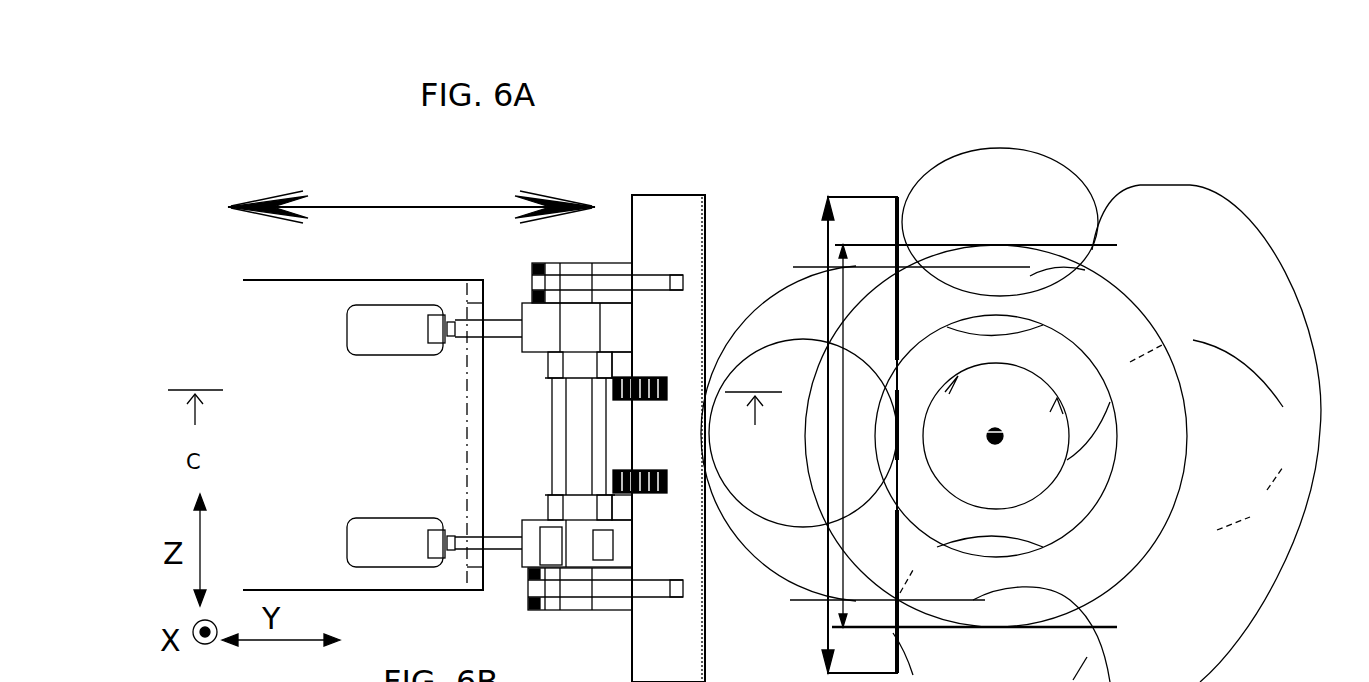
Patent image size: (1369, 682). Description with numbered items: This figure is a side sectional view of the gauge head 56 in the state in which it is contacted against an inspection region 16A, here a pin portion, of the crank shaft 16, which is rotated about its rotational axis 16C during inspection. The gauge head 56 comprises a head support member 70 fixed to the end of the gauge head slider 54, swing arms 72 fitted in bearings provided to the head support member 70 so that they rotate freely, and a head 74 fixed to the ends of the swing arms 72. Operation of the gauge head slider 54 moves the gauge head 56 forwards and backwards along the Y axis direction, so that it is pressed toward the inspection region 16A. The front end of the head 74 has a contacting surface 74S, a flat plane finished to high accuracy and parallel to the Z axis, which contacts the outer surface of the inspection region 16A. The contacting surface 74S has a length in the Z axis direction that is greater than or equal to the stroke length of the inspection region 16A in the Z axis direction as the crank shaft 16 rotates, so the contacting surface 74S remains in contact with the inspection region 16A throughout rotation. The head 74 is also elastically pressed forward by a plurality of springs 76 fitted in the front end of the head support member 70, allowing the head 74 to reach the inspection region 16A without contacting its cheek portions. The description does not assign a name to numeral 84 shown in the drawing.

The swing arrow / swinging motion 84 is at (405, 206).
The gauge head slider 54 is at (388, 280).
The head support member 70 is at (506, 304).
The swing arms 72 is at (553, 263).
The springs 76 is at (650, 377).
The gauge head 56 is at (611, 190).
The head 74 is at (668, 195).
The contacting surface 74S is at (712, 226).
The crank shaft 16 is at (838, 178).
The inspection region 16A is at (768, 342).
The rotational axis 16C is at (1001, 427).